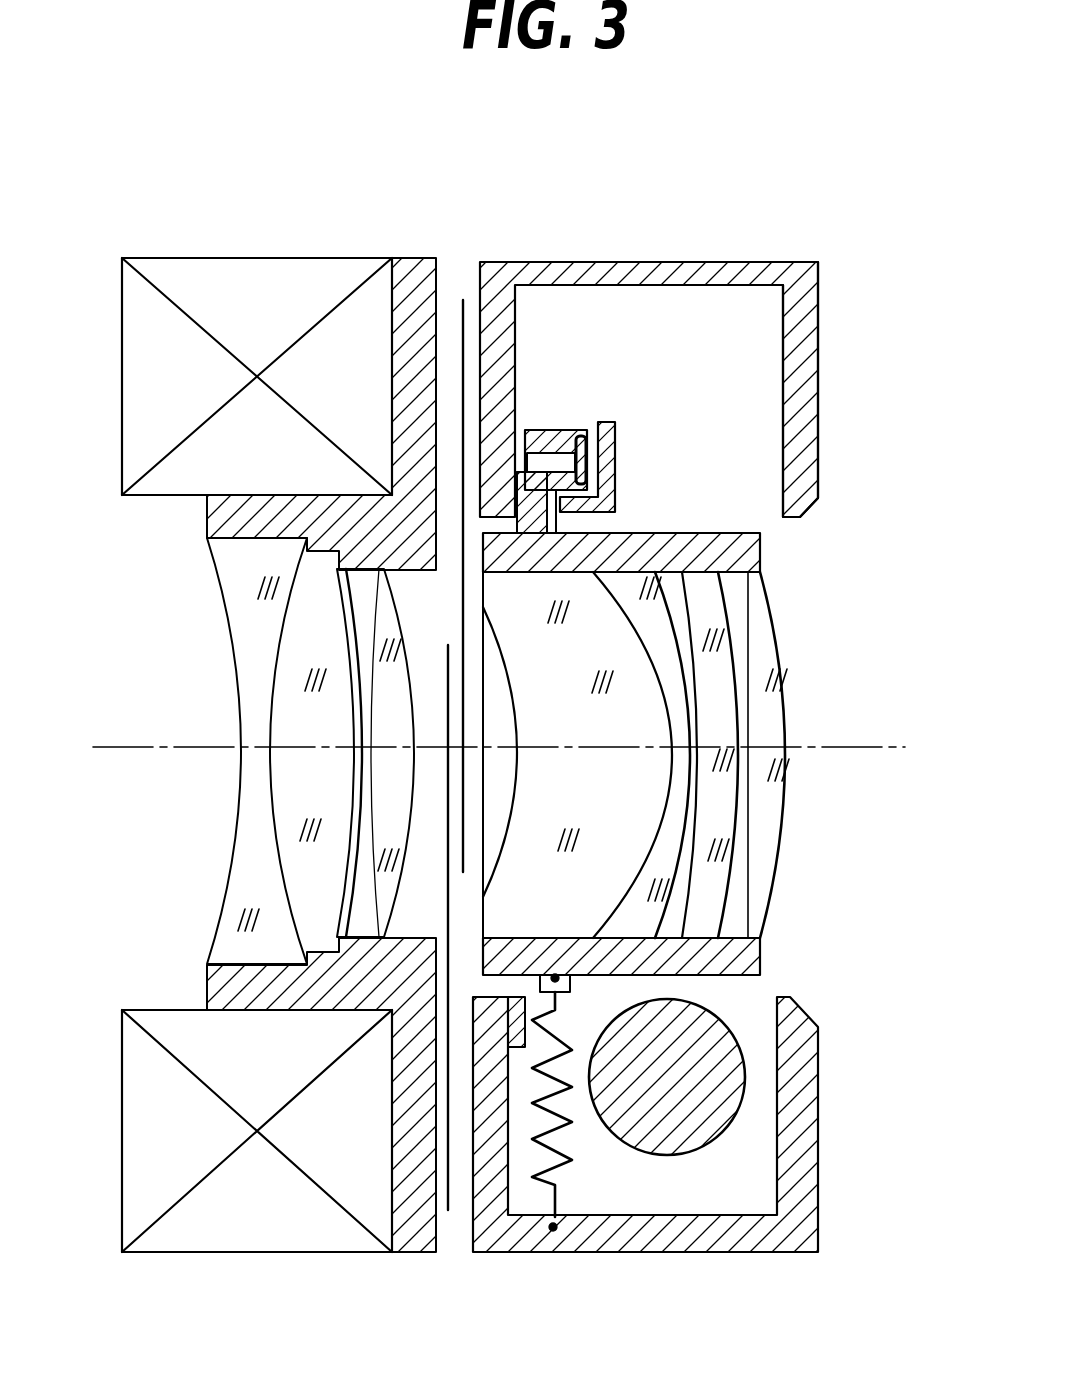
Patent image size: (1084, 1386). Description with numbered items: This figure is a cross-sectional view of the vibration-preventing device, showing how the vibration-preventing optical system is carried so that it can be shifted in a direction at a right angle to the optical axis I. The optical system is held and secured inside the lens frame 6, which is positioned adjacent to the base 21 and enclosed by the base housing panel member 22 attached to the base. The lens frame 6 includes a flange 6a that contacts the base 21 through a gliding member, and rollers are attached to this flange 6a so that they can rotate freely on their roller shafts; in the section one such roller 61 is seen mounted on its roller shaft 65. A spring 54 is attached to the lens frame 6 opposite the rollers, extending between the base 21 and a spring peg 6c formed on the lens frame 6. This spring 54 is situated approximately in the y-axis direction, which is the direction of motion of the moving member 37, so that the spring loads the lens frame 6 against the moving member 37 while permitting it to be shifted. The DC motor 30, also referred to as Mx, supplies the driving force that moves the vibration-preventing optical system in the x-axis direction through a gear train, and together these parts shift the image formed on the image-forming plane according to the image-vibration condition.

The base 21 is at (495, 287).
The base housing panel member 22 is at (807, 407).
The lens frame 6 is at (670, 540).
The flange 6a is at (537, 440).
The roller 61 is at (557, 430).
The roller shaft 65 is at (583, 420).
The moving member 37 is at (618, 448).
The spring peg 6c is at (572, 983).
The spring 54 is at (557, 1163).
The DC motor 30 is at (703, 1127).
The optical axis I is at (125, 747).